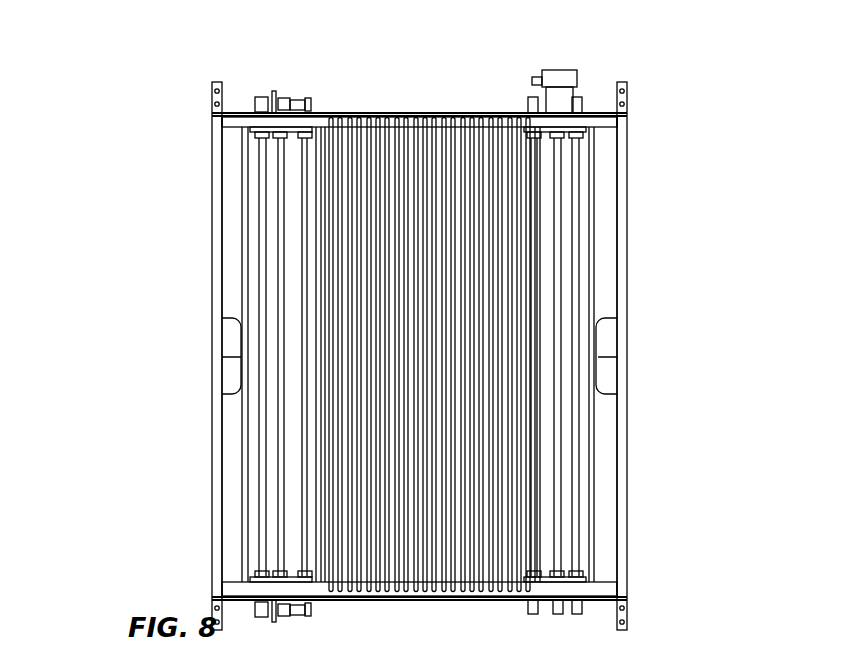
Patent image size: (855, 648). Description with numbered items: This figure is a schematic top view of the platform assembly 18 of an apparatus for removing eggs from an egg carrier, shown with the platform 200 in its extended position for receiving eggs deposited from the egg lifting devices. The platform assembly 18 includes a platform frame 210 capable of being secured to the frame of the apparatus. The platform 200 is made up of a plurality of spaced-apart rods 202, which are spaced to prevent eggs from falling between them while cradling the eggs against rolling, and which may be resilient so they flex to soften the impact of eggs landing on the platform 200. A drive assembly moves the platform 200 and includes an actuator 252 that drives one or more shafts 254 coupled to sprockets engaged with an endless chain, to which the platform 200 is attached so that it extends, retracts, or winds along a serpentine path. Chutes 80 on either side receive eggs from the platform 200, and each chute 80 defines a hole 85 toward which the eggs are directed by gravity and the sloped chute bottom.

The platform assembly 18 is at (703, 134).
The chute 80 is at (229, 252).
The hole 85 is at (235, 360).
The platform 200 is at (405, 318).
The rods 202 is at (400, 137).
The platform frame 210 is at (481, 114).
The actuator 252 is at (566, 82).
The shafts 254 is at (264, 560).